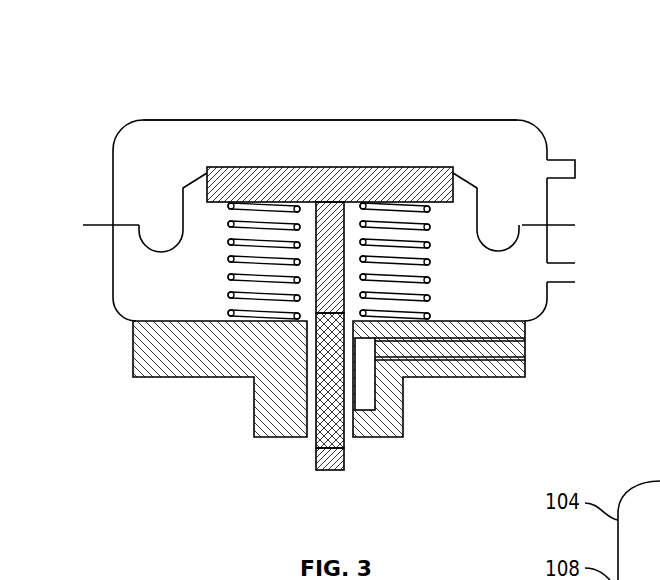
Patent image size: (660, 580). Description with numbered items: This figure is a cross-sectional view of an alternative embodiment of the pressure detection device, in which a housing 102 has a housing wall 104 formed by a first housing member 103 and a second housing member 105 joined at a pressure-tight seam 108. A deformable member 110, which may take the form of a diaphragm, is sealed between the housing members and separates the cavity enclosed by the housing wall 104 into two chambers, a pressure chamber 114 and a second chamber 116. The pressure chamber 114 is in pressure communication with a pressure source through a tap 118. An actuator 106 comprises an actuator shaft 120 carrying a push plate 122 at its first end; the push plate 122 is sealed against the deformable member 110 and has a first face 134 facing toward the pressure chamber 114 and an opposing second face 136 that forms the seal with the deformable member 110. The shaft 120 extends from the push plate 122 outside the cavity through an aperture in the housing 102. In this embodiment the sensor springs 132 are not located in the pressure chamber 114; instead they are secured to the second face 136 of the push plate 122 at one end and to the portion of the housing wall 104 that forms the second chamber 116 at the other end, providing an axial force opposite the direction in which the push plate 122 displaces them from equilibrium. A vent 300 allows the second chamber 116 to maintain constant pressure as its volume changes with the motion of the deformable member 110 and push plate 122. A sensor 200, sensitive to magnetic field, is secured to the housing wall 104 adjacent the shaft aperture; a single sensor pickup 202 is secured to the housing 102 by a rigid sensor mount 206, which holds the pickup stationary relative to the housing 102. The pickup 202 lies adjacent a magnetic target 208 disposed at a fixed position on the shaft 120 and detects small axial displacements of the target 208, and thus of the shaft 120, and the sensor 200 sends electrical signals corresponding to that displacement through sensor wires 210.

The sensor 200 is at (119, 74).
The housing wall 104 is at (113, 158).
The second housing member 105 is at (113, 272).
The first housing member 103 is at (262, 120).
The housing 102 is at (113, 250).
The second face 136 is at (208, 203).
The deformable member 110 is at (471, 185).
The tap 118 is at (573, 164).
The pressure-tight seam 108 is at (547, 225).
The vent 300 is at (565, 272).
The pressure chamber 114 is at (320, 155).
The second chamber 116 is at (164, 280).
The first face 134 is at (232, 166).
The push plate 122 is at (352, 170).
The sensor springs 132 is at (430, 262).
The actuator 106 is at (325, 270).
The rigid sensor mount 206 is at (370, 428).
The sensor pickup 202 is at (370, 382).
The sensor wires 210 is at (525, 339).
The magnetic target 208 is at (327, 368).
The actuator shaft 120 is at (328, 462).